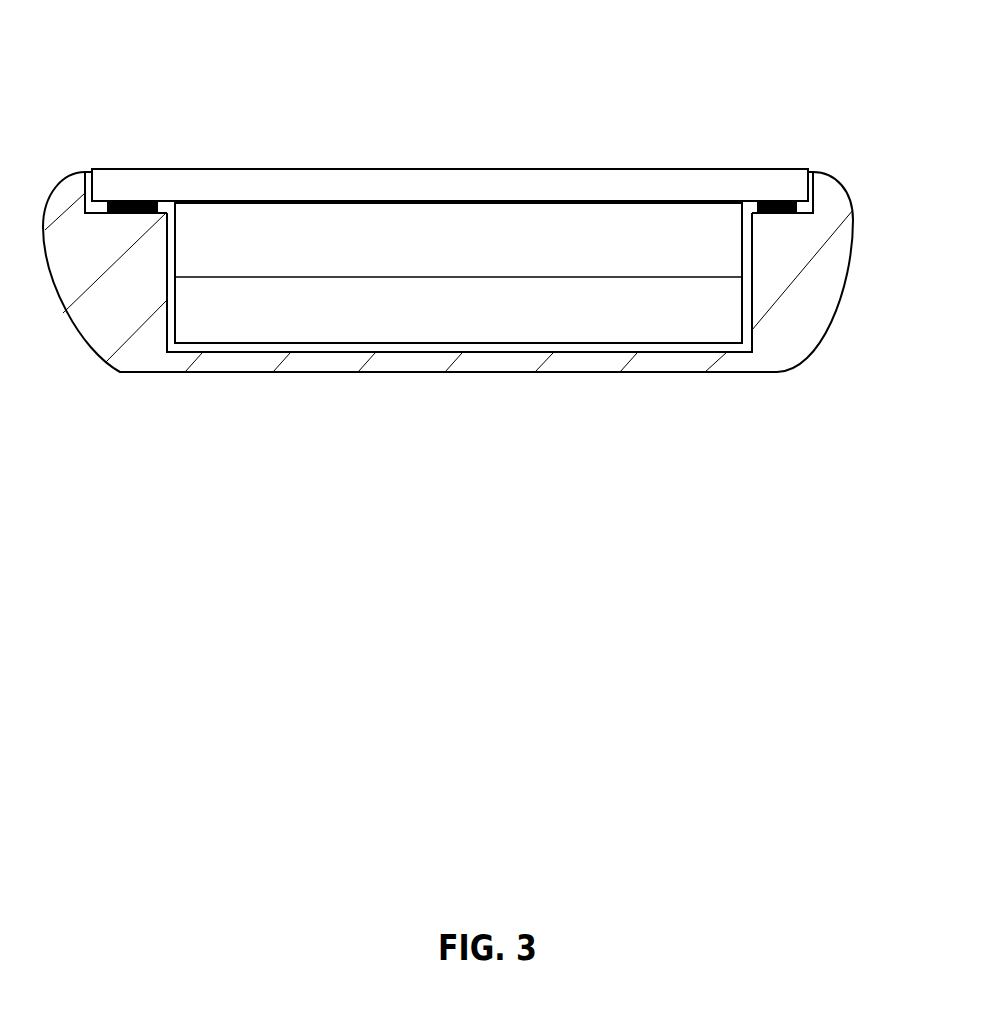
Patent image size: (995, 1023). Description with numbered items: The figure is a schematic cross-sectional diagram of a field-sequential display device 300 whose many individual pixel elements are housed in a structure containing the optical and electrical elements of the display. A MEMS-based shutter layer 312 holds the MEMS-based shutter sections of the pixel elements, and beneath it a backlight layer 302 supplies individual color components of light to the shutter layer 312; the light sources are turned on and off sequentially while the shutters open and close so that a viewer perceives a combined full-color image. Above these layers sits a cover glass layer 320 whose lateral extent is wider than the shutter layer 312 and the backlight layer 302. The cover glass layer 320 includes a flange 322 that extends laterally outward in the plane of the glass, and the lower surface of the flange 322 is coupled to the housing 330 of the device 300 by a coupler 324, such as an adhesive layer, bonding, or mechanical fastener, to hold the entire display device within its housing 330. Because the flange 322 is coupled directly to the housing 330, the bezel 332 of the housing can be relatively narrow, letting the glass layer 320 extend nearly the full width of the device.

The field-sequential display device 300 is at (466, 137).
The backlight layer 302 is at (473, 317).
The MEMS-based shutter layer 312 is at (473, 250).
The cover glass layer 320 is at (465, 196).
The flange 322 is at (118, 185).
The coupler 324 is at (133, 204).
The housing 330 is at (135, 372).
The bezel 332 is at (822, 187).